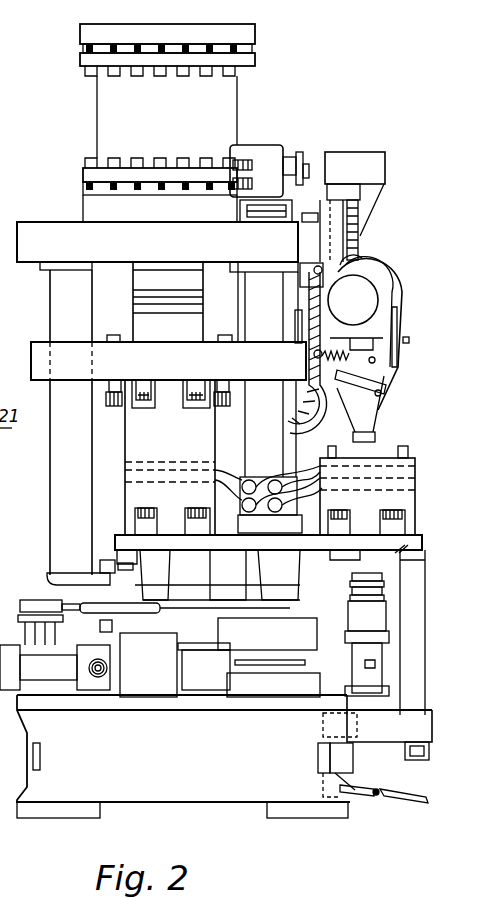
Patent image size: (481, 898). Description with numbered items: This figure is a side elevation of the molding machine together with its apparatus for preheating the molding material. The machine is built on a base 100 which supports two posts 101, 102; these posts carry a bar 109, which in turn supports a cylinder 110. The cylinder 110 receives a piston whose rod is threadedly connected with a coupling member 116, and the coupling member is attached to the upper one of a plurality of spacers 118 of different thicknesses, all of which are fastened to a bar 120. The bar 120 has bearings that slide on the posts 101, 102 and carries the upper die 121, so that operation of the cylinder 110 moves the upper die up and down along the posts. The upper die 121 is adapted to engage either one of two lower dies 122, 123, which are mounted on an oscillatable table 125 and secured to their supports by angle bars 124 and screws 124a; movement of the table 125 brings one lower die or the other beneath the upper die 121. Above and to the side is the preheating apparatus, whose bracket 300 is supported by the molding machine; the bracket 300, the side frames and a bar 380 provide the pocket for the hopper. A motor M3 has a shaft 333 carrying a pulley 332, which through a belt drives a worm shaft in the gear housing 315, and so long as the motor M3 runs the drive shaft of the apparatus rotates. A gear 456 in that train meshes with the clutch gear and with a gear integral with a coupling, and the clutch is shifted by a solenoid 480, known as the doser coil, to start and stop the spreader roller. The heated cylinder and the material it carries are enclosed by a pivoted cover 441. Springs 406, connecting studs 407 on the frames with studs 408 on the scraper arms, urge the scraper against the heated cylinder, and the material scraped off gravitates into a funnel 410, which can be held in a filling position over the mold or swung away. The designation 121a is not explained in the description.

The cylinder 110 is at (100, 118).
The motor M3 is at (265, 152).
The pulley 332 is at (300, 148).
The shaft 333 is at (308, 163).
The bracket 300 is at (305, 213).
The bar 380 is at (385, 170).
The solenoid 480 is at (349, 182).
The gear 456 is at (352, 252).
The gear housing 315 is at (378, 272).
The cover 441 is at (402, 278).
The bar 109 is at (53, 224).
The coupling member 116 is at (177, 266).
The spacers 118 is at (136, 325).
The bar 120 is at (40, 345).
The spring 406 is at (325, 357).
The stud 407 is at (316, 355).
The stud 408 is at (366, 380).
The funnel 410 is at (367, 416).
The post 101 is at (283, 441).
The upper die 121 is at (133, 432).
The post 102 is at (54, 499).
The lower die 122 is at (130, 500).
The screws 124a is at (347, 528).
The angle bars 124 is at (355, 524).
The lower die 123 is at (413, 494).
The oscillatable table 125 is at (418, 542).
The base 100 is at (238, 803).
The column housing portion 121a is at (21, 858).